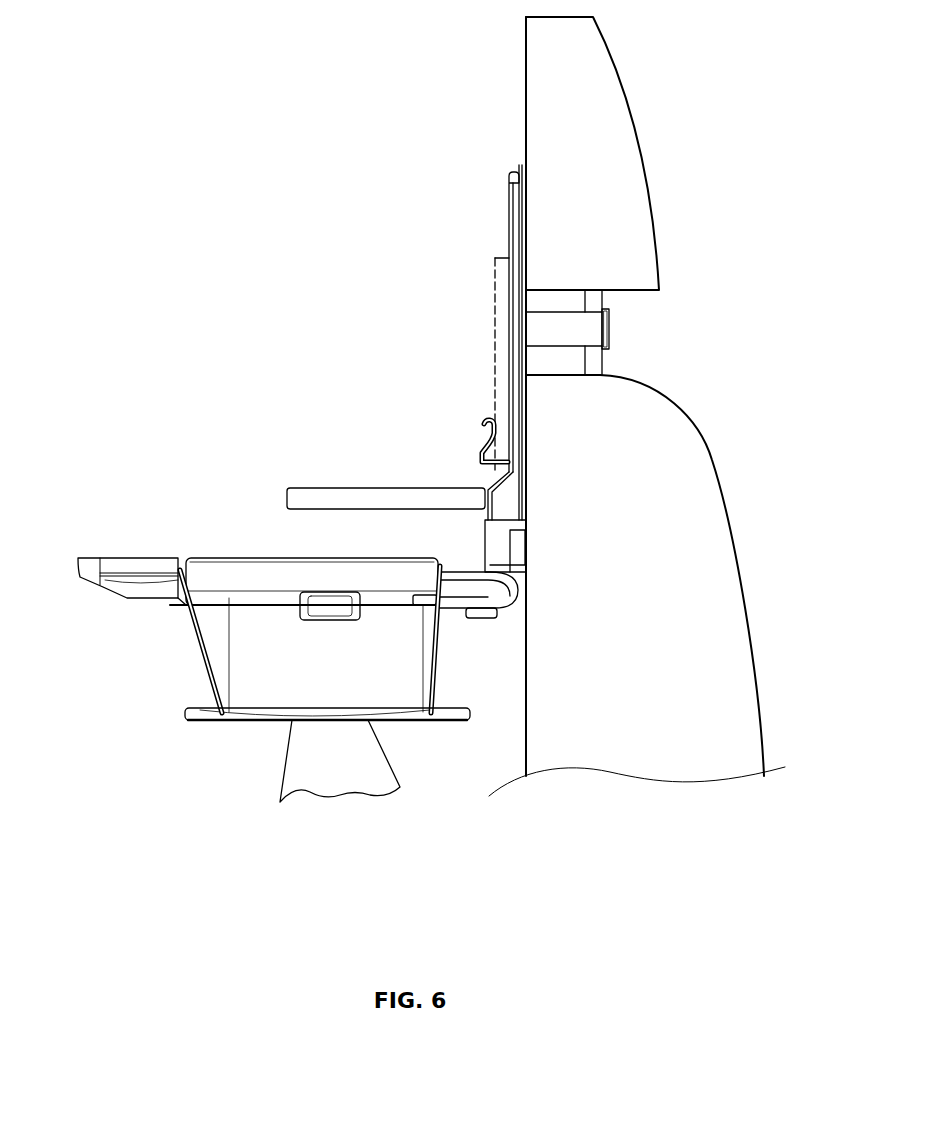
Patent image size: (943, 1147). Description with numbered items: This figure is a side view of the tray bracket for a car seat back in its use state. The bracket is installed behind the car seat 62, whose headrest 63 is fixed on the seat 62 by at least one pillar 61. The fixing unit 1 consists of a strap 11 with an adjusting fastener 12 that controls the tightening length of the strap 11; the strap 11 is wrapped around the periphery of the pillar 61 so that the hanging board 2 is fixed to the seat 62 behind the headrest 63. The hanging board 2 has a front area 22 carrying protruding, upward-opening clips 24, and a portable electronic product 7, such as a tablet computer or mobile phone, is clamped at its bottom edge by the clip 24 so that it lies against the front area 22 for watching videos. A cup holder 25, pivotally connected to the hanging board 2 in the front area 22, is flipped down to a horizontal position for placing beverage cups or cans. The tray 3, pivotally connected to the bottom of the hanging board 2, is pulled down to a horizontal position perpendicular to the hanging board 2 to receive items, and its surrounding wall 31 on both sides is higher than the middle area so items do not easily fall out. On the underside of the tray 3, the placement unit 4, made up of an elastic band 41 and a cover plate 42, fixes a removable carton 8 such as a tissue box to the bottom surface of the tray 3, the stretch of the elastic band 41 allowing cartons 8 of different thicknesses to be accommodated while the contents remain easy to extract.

The fixing unit 1 is at (664, 332).
The strap 11 is at (580, 318).
The adjusting fastener 12 is at (609, 328).
The hanging board 2 is at (399, 310).
The front area 22 is at (508, 195).
The clip 24 is at (487, 441).
The cup holder 25 is at (334, 500).
The tray 3 is at (135, 557).
The surrounding wall 31 is at (248, 557).
The placement unit 4 is at (252, 644).
The elastic band 41 is at (207, 663).
The cover plate 42 is at (207, 712).
The pillar 61 is at (592, 364).
The seat 62 is at (734, 561).
The headrest 63 is at (634, 143).
The portable electronic product 7 is at (495, 313).
The carton 8 is at (247, 697).